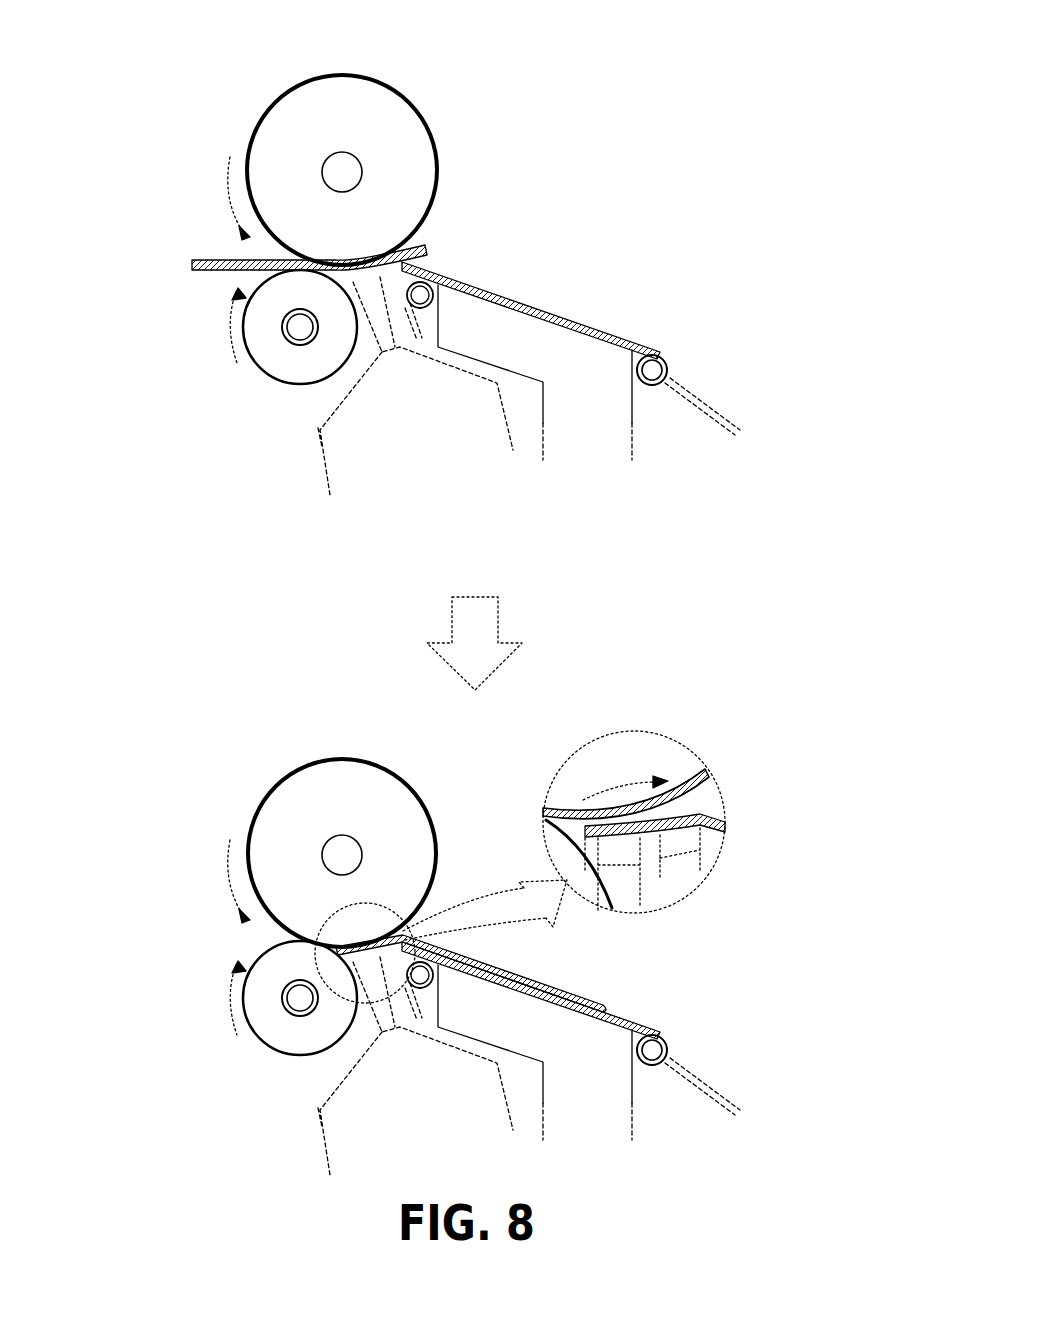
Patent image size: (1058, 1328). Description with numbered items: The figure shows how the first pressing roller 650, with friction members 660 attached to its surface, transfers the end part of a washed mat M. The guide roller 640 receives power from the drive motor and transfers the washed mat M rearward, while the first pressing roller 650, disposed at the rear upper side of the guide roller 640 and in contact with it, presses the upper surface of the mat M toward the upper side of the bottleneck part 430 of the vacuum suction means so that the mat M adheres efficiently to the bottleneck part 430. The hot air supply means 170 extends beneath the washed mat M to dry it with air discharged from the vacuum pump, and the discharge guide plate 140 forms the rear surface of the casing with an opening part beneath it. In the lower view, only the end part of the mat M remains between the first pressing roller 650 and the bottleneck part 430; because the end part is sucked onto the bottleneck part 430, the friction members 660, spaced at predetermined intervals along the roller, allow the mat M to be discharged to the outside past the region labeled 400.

The first pressing roller 650 is at (390, 123).
The friction members 660 is at (380, 75).
The mat M is at (225, 258).
The guide roller 640 is at (262, 328).
The hot air supply means 170 is at (553, 352).
The discharge guide plate 140 is at (640, 355).
The frame 400 is at (297, 442).
The bottleneck part 430 is at (722, 850).